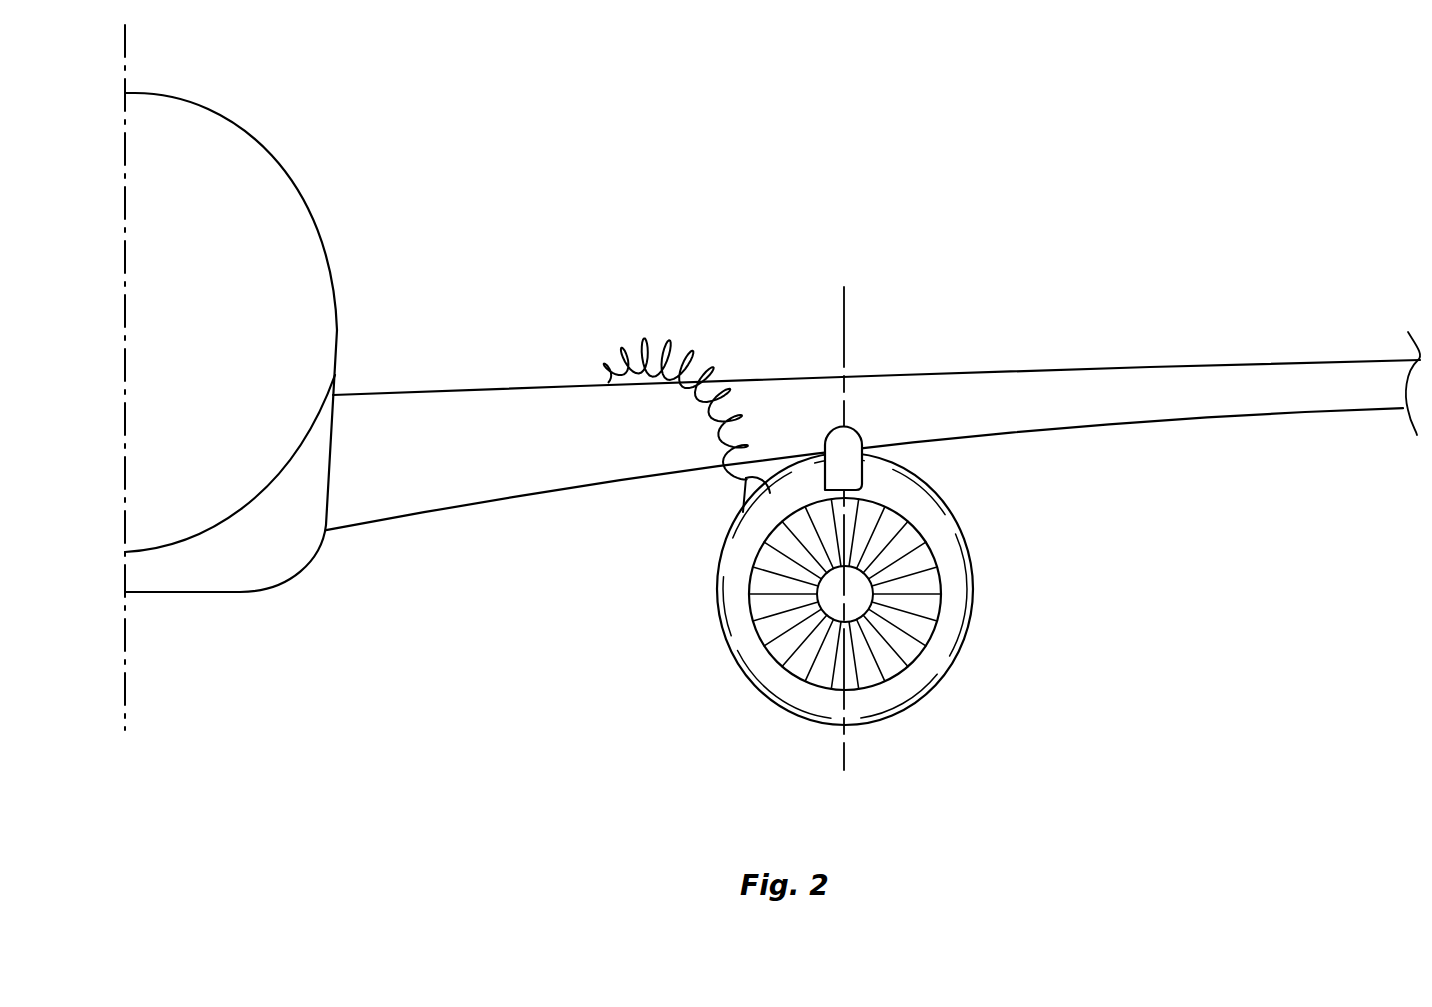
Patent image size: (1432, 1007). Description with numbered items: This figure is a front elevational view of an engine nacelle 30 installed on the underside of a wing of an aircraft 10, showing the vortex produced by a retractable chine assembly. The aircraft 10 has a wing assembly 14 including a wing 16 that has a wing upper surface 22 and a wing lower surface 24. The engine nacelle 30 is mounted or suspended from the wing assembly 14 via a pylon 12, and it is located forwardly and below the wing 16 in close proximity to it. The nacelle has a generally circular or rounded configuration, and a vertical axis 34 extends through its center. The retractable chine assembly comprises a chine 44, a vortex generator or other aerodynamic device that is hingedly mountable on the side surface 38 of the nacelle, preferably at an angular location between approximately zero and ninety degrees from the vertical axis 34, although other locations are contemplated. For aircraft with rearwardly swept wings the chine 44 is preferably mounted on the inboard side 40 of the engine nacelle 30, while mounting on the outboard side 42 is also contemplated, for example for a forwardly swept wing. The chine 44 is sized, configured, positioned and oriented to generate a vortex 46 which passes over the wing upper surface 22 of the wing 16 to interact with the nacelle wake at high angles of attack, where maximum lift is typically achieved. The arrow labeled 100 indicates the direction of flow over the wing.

The aircraft 10 is at (1117, 117).
The pylon 12 is at (875, 462).
The wing assembly 14 is at (873, 350).
The wing 16 is at (1327, 360).
The wing upper surface 22 is at (1212, 362).
The wing lower surface 24 is at (1258, 418).
The engine nacelle 30 is at (846, 507).
The vertical axis 34 is at (845, 305).
The side surface 38 is at (970, 588).
The inboard side 40 is at (846, 589).
The outboard side 42 is at (965, 552).
The chine 44 is at (737, 498).
The vortex 46 is at (654, 333).
The flow direction 100 is at (678, 493).